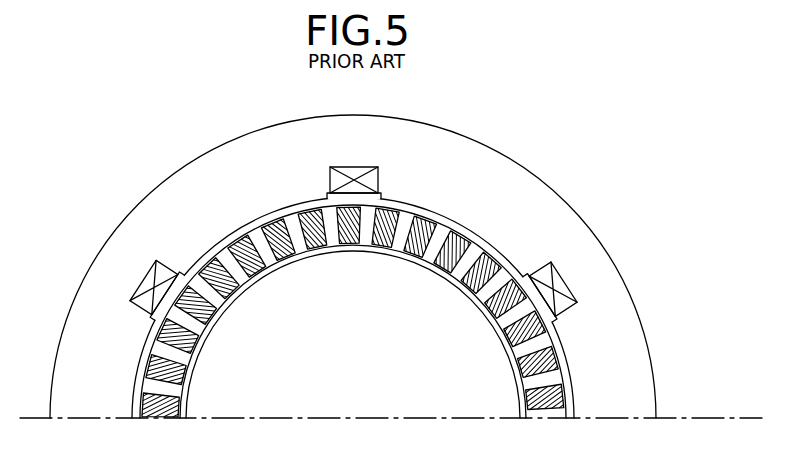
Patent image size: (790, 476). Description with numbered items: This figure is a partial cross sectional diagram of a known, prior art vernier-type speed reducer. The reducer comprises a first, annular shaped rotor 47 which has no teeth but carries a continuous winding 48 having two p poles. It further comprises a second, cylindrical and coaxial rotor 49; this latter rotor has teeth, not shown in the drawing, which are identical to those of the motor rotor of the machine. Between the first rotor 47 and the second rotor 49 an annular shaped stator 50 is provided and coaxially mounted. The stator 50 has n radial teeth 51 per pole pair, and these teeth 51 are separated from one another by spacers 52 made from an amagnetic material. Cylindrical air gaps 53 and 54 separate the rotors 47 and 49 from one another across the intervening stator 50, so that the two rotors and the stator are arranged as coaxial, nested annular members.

The first annular shaped rotor 47 is at (464, 162).
The continuous winding 48 is at (356, 167).
The second cylindrical coaxial rotor 49 is at (275, 388).
The annular shaped stator 50 is at (242, 215).
The radial teeth 51 is at (220, 242).
The spacers 52 is at (236, 262).
The cylindrical air gap 53 is at (480, 222).
The cylindrical air gap 54 is at (525, 420).